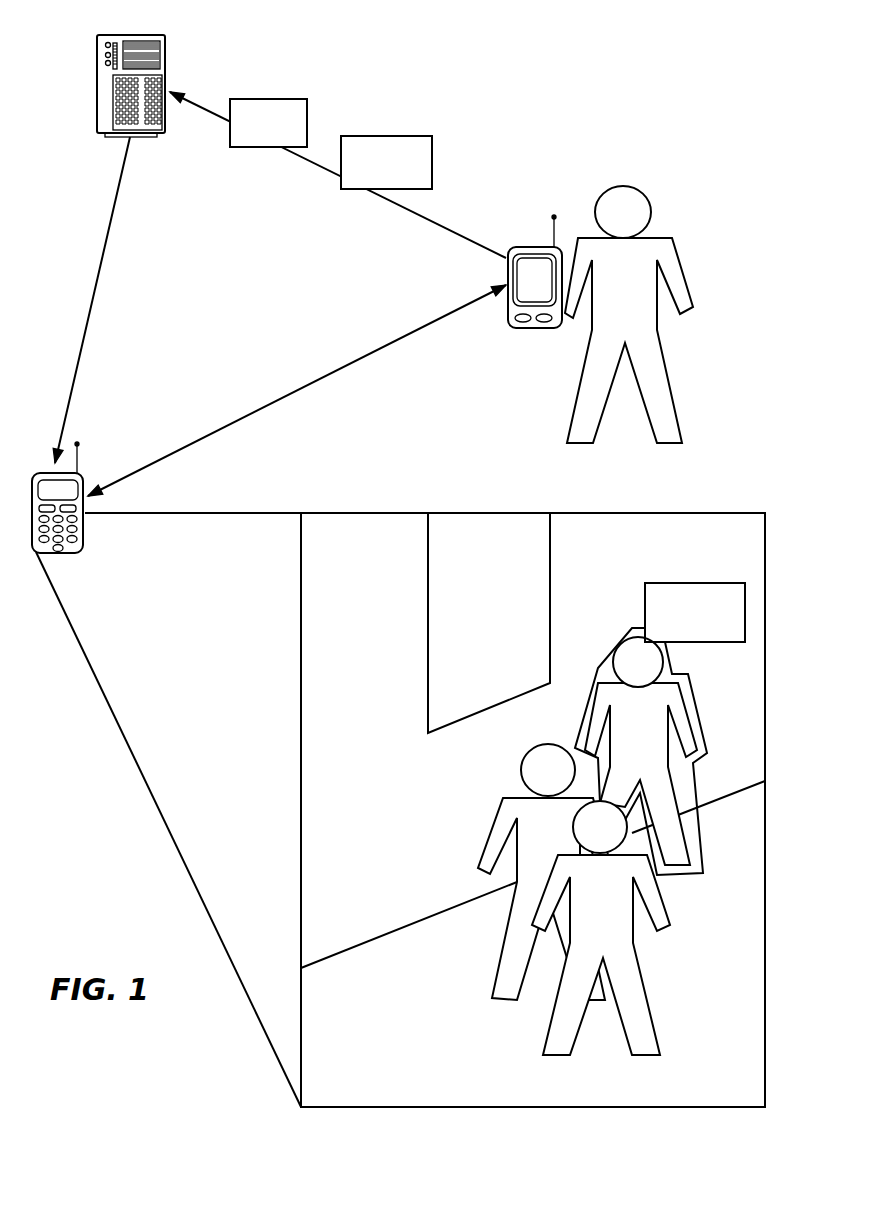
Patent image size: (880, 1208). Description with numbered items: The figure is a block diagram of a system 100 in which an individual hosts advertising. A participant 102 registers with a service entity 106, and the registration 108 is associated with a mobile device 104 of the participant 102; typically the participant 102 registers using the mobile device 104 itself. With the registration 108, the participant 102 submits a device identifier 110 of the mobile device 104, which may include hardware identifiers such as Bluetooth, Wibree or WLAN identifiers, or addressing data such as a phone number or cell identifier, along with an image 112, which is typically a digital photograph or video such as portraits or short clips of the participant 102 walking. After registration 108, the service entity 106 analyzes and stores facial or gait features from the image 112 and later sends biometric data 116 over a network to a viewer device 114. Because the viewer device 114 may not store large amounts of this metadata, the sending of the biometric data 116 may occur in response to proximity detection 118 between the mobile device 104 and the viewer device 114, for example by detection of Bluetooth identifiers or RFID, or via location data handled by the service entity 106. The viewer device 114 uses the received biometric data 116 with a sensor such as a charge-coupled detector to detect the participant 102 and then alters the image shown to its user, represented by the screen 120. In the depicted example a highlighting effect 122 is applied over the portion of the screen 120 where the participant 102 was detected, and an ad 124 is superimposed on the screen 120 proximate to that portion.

The system 100 is at (627, 42).
The participant 102 is at (618, 186).
The mobile device 104 is at (533, 247).
The service entity 106 is at (100, 35).
The registration 108 is at (447, 230).
The device identifier 110 is at (283, 99).
The image 112 is at (405, 136).
The viewer device 114 is at (75, 555).
The biometric data 116 is at (103, 266).
The proximity detection 118 is at (345, 370).
The screen 120 is at (332, 1108).
The highlighting effect 122 is at (688, 676).
The ad 124 is at (682, 583).